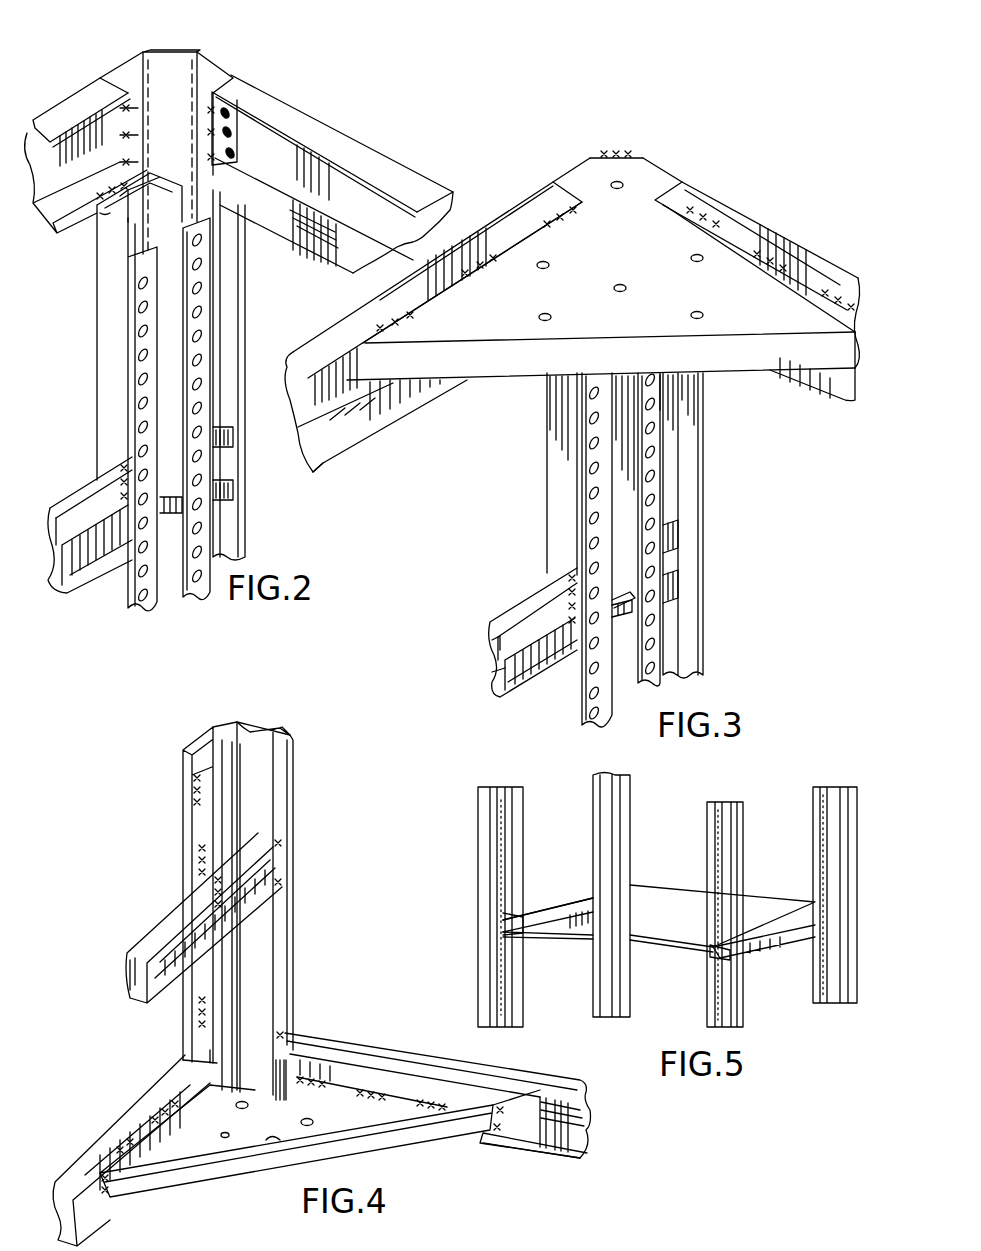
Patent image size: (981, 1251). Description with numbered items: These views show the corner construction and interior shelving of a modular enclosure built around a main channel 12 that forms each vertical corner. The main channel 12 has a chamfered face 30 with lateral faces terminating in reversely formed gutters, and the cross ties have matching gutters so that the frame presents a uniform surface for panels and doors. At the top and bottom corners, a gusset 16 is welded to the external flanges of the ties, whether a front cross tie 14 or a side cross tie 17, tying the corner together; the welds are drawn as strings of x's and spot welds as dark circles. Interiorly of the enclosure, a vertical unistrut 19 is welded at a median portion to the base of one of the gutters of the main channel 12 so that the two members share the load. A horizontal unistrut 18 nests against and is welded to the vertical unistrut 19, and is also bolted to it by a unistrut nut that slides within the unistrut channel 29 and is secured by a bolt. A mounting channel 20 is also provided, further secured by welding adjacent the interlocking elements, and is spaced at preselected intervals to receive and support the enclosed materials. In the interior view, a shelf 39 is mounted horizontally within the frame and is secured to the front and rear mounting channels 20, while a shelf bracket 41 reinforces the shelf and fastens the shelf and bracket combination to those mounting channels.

In FIG. 2, the main channel 12 is at (180, 51).
In FIG. 3, the main channel 12 is at (583, 160).
In FIG. 4, the main channel 12 is at (300, 940).
In FIG. 5, the main channel 12 is at (855, 803).
In FIG. 2, the front cross tie 14 is at (330, 174).
In FIG. 3, the front cross tie 14 is at (805, 249).
In FIG. 3, the gusset 16 is at (680, 248).
In FIG. 4, the gusset 16 is at (217, 1180).
In FIG. 3, the side cross tie 17 is at (495, 218).
In FIG. 2, the horizontal unistrut 18 is at (80, 487).
In FIG. 3, the horizontal unistrut 18 is at (520, 600).
In FIG. 4, the horizontal unistrut 18 is at (150, 932).
In FIG. 2, the vertical unistrut 19 is at (97, 337).
In FIG. 3, the vertical unistrut 19 is at (545, 488).
In FIG. 4, the vertical unistrut 19 is at (190, 787).
In FIG. 2, the mounting channel 20 is at (183, 583).
In FIG. 3, the mounting channel 20 is at (652, 508).
In FIG. 3, the unistrut channel 29 is at (492, 665).
In FIG. 2, the chamfered face 30 is at (160, 52).
In FIG. 5, the shelf 39 is at (700, 929).
In FIG. 5, the shelf bracket 41 is at (537, 930).